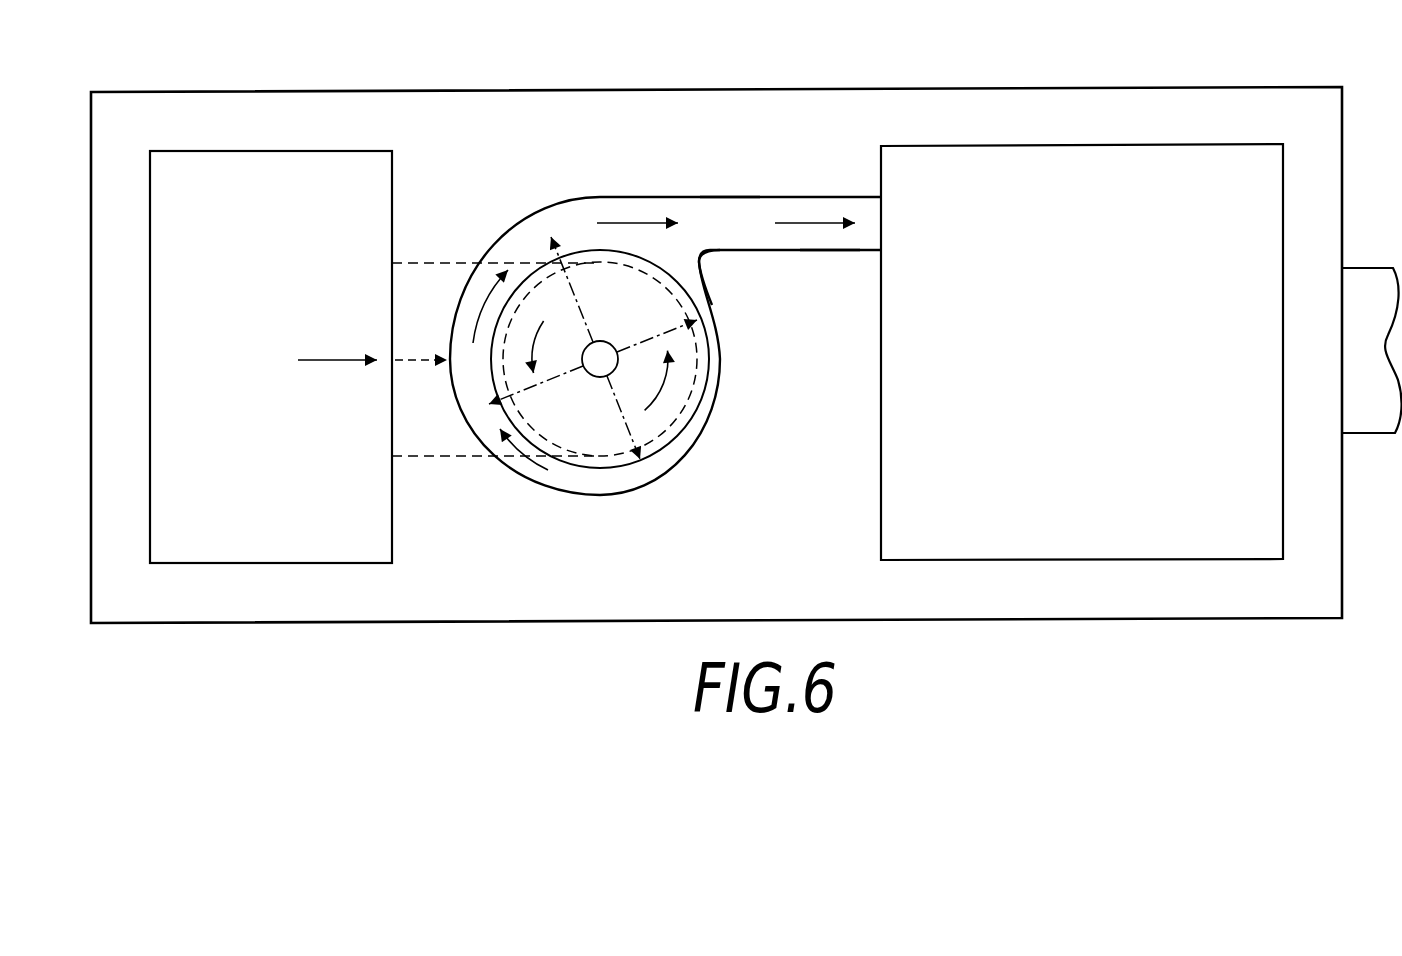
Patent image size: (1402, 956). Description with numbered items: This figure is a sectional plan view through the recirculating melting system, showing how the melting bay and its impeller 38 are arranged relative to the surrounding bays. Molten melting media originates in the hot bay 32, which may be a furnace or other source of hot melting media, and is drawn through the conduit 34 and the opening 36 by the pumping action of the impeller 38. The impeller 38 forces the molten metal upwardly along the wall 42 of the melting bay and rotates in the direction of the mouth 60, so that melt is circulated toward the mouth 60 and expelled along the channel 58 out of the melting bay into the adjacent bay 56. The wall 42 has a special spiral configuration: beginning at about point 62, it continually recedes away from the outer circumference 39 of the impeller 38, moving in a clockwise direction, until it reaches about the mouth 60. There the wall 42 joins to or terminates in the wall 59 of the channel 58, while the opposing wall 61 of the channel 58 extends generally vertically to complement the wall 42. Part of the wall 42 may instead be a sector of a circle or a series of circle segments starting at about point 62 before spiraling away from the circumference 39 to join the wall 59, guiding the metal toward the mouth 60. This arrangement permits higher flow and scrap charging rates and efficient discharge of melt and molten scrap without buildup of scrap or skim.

The hot bay 32 is at (282, 190).
The conduit 34 is at (407, 395).
The opening 36 is at (723, 383).
The impeller 38 is at (610, 433).
The outer circumference 39 is at (705, 419).
The wall 42 is at (540, 215).
The adjacent bay 56 is at (1106, 366).
The channel 58 is at (767, 212).
The wall 59 is at (718, 196).
The mouth 60 is at (692, 220).
The wall 61 is at (818, 252).
The point 62 is at (708, 262).